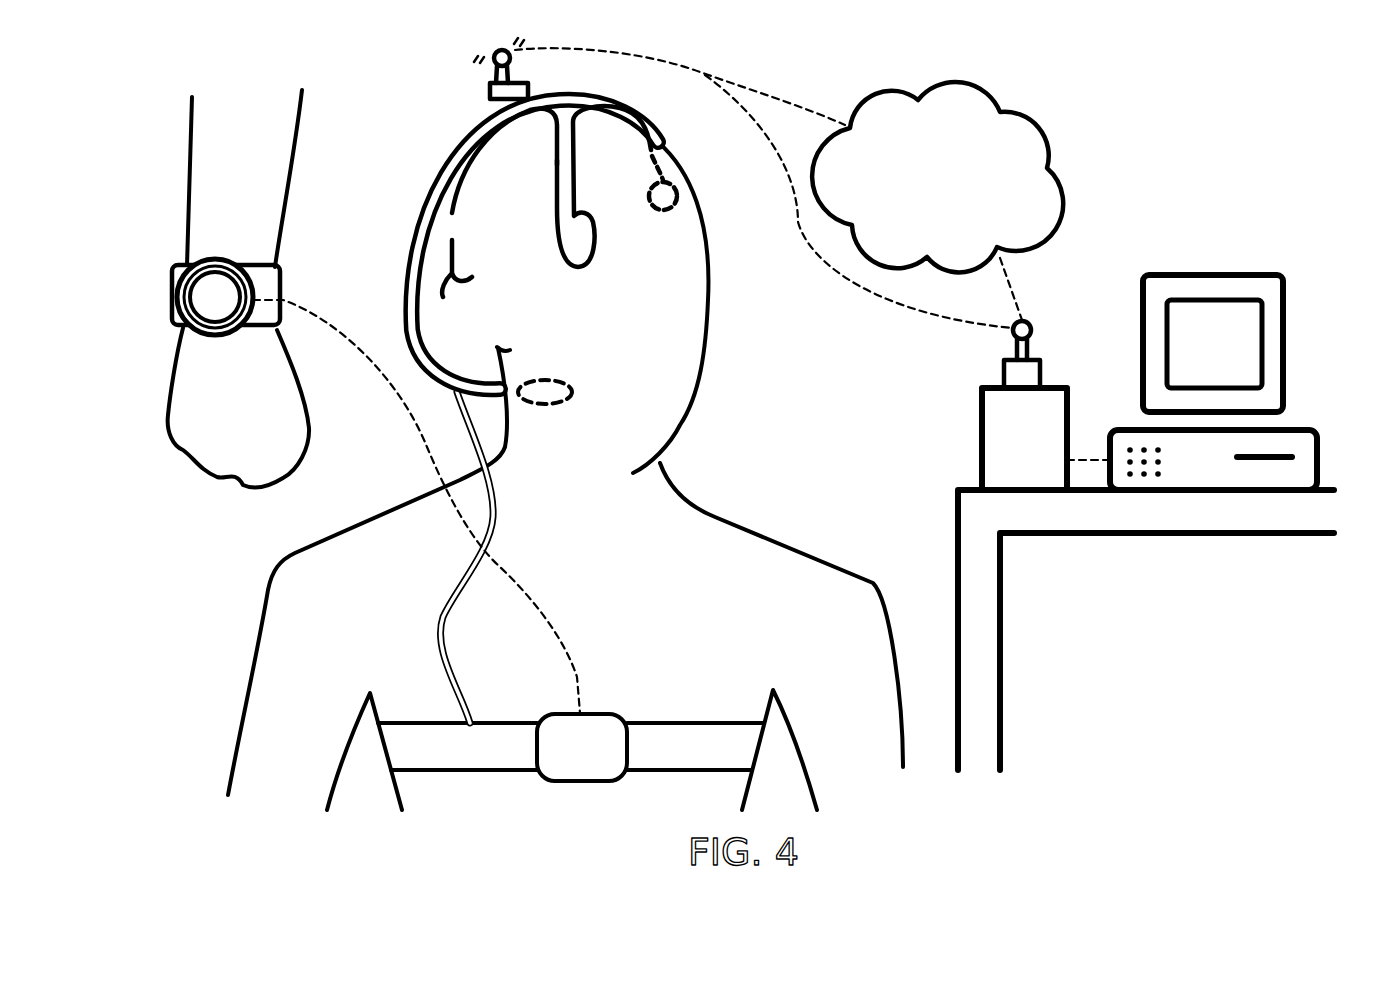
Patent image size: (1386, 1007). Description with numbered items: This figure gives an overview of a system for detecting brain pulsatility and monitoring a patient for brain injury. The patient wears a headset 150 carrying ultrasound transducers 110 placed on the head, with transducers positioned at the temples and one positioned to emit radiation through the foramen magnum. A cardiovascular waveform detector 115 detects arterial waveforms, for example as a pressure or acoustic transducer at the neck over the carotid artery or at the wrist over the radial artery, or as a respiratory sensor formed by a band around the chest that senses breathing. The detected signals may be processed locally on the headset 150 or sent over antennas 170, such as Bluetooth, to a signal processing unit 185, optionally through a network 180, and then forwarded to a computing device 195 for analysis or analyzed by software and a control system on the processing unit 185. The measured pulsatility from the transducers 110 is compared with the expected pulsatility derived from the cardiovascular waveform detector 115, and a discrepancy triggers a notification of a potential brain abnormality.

The ultrasound transducer 110 is at (557, 214).
The cardiovascular waveform detector 115 is at (215, 293).
The headset 150 is at (584, 105).
The antenna 170 is at (493, 65).
The network 180 is at (956, 210).
The signal processing unit 185 is at (1043, 457).
The computing device 195 is at (1233, 357).